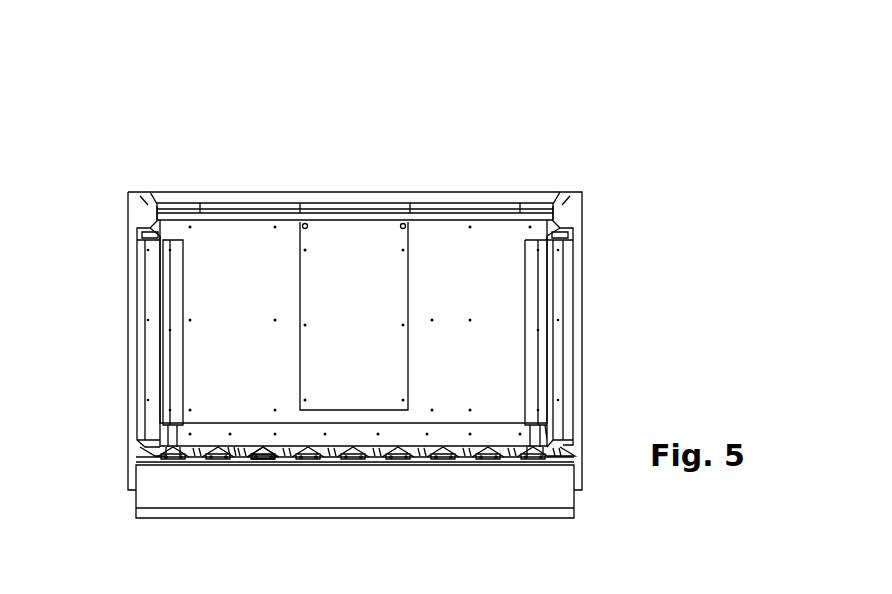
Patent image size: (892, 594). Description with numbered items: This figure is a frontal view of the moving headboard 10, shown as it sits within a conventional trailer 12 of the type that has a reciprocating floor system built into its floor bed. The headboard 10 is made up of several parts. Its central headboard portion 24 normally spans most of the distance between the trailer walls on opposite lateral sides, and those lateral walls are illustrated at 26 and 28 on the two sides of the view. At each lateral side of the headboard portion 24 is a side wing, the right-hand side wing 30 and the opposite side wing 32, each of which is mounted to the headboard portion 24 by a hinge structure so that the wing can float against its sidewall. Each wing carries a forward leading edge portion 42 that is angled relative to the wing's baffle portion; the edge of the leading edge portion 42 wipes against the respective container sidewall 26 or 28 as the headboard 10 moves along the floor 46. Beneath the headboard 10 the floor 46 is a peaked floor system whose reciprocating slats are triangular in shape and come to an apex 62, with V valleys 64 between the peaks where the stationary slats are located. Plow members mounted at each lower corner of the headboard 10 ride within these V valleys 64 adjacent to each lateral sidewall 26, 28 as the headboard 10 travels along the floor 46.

The headboard 10 is at (275, 156).
The trailer 12 is at (584, 210).
The headboard portion 24 is at (479, 292).
The lateral wall 26 is at (165, 296).
The lateral wall 28 is at (568, 370).
The right-hand side wing 30 is at (545, 337).
The side wing 32 is at (166, 293).
The forward leading edge portion 42 is at (558, 303).
The floor 46 is at (355, 452).
The apex 62 is at (264, 447).
The V valleys 64 is at (243, 447).